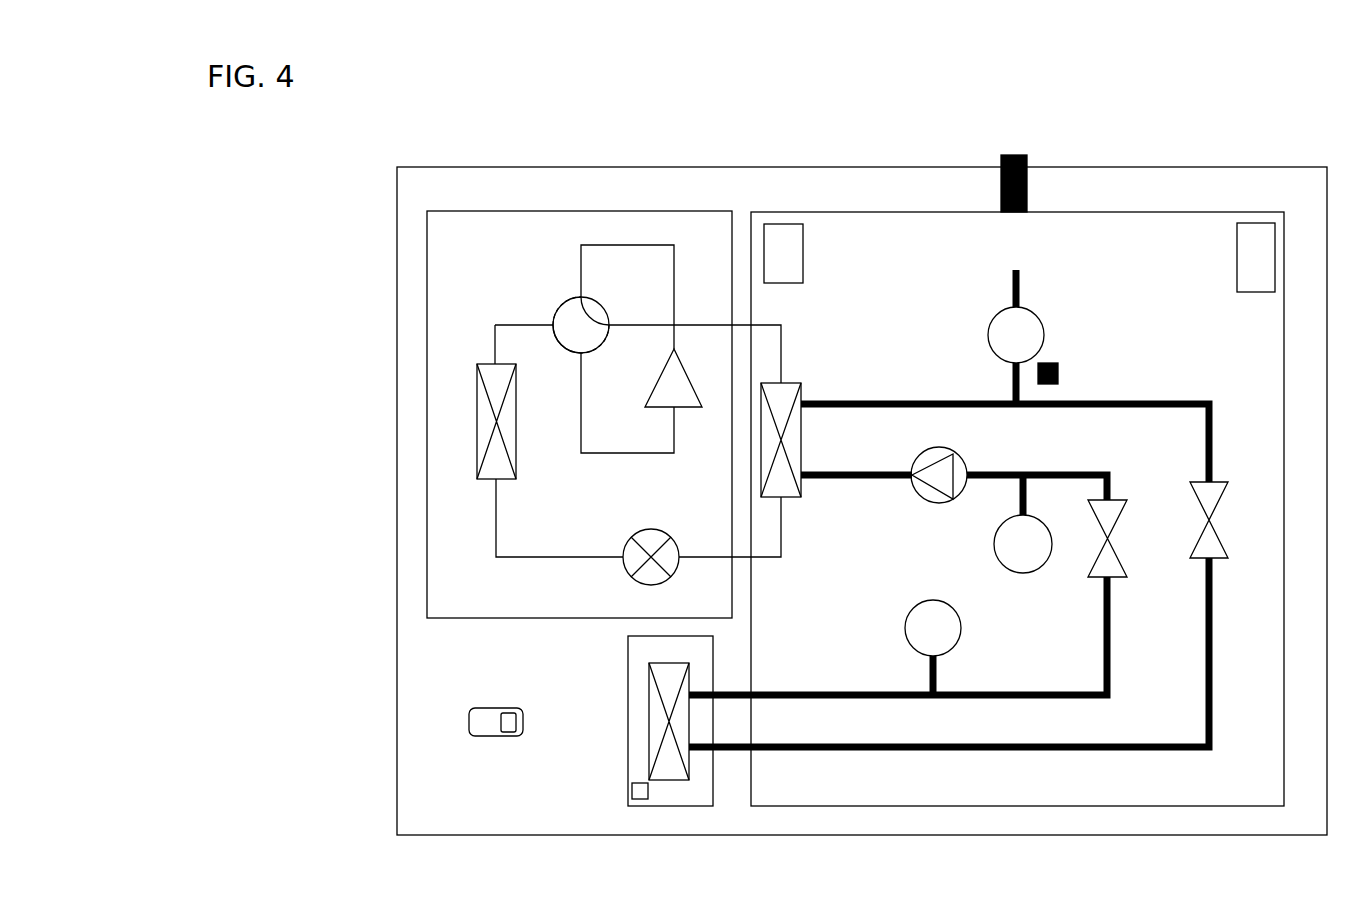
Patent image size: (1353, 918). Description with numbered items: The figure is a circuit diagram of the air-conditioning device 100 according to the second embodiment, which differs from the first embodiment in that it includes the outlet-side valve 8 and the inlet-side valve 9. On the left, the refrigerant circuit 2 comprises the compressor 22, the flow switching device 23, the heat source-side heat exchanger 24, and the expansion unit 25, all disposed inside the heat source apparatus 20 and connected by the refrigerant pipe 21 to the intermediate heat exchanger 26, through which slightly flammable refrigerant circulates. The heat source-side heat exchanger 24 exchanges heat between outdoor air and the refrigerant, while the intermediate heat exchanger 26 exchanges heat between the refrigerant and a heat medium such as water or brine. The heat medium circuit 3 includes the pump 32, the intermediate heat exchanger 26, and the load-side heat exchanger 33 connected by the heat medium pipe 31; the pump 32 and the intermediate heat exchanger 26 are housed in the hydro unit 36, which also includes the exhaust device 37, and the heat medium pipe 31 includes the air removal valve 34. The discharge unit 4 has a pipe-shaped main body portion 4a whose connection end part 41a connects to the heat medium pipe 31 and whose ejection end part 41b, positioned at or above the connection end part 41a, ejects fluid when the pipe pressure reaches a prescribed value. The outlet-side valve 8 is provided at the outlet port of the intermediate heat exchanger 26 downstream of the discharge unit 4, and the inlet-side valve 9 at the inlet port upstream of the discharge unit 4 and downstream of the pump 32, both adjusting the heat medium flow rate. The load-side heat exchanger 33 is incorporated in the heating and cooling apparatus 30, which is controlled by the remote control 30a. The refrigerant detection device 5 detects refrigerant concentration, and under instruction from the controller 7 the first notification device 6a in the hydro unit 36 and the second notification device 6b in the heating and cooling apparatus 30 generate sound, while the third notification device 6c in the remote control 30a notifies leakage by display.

The air-conditioning device 100 is at (662, 166).
The heat source apparatus 20 is at (517, 212).
The refrigerant circuit 2 is at (522, 272).
The refrigerant pipe 21 is at (524, 325).
The compressor 22 is at (690, 374).
The flow switching device 23 is at (596, 302).
The heat source-side heat exchanger 24 is at (476, 480).
The expansion unit 25 is at (626, 572).
The intermediate heat exchanger 26 is at (790, 506).
The hydro unit 36 is at (1136, 212).
The exhaust device 37 is at (1028, 160).
The first notification device 6a is at (803, 251).
The controller 7 is at (1255, 293).
The heat medium circuit 3 is at (1148, 284).
The discharge unit 4 is at (1036, 315).
The connection end part 41a is at (1010, 397).
The ejection end part 41b is at (1010, 273).
The main body portion 4a is at (915, 282).
The refrigerant detection device 5 is at (1059, 371).
The heat medium pipe 31 is at (1152, 401).
The pump 32 is at (964, 456).
The air removal valve 34 is at (940, 601).
The inlet-side valve 9 is at (1115, 500).
The outlet-side valve 8 is at (1222, 482).
The heating and cooling apparatus 30 is at (627, 678).
The load-side heat exchanger 33 is at (648, 740).
The second notification device 6b is at (649, 797).
The remote control 30a is at (478, 727).
The third notification device 6c is at (505, 733).